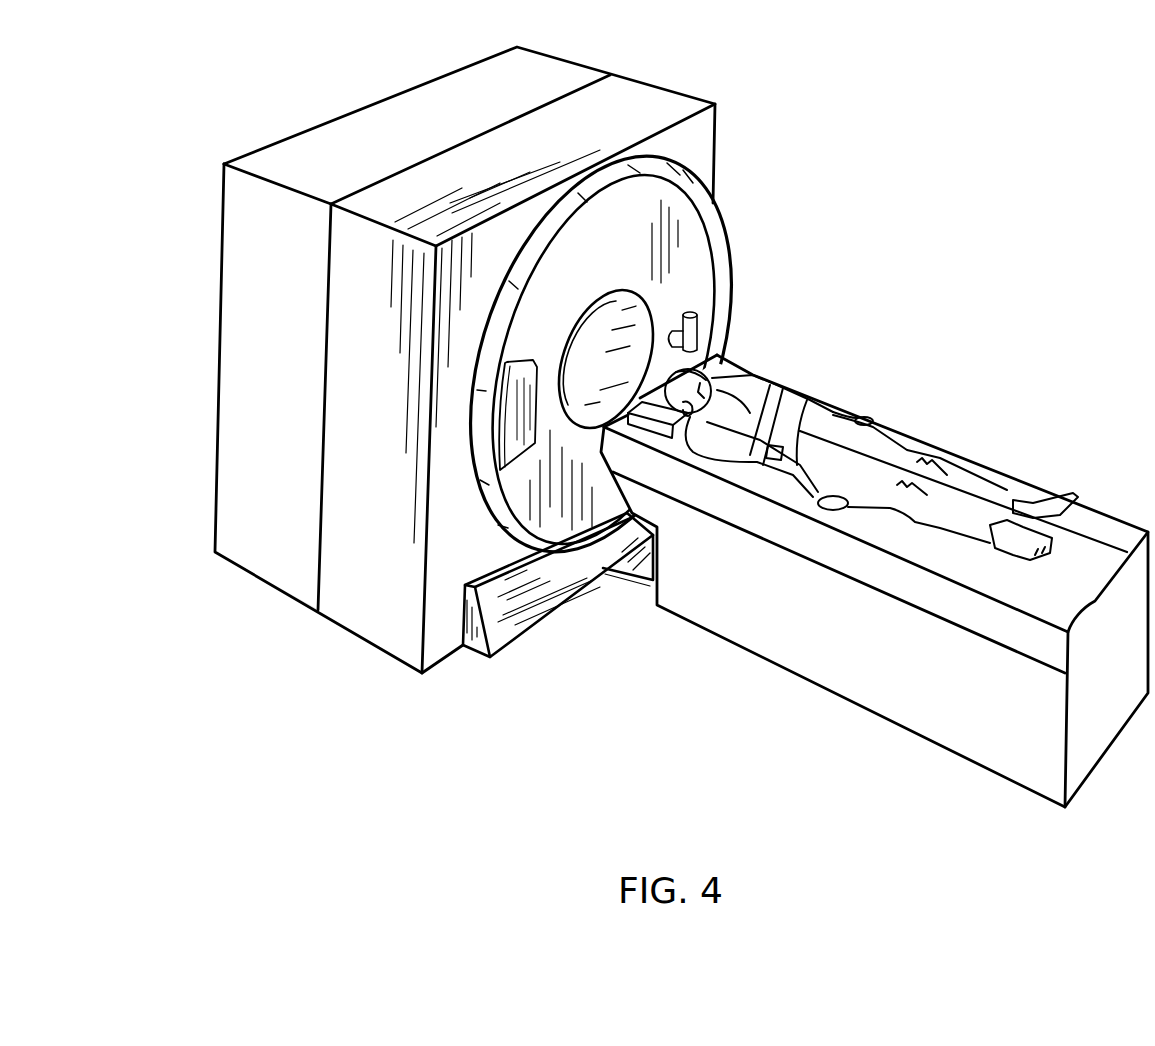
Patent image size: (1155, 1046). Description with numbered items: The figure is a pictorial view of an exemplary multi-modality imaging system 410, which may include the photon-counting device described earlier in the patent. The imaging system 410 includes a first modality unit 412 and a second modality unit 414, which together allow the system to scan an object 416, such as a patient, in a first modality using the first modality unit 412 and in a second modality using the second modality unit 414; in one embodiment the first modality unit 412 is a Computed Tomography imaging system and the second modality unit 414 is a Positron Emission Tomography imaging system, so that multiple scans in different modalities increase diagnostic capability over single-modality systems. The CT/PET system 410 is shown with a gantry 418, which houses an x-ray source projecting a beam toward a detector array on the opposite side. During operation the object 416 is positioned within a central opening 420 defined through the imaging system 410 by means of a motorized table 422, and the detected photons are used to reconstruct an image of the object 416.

The multi-modality imaging system 410 is at (622, 600).
The first modality unit 412 is at (370, 625).
The second modality unit 414 is at (277, 572).
The object 416 is at (820, 402).
The gantry 418 is at (707, 145).
The central opening 420 is at (600, 323).
The motorized table 422 is at (912, 708).